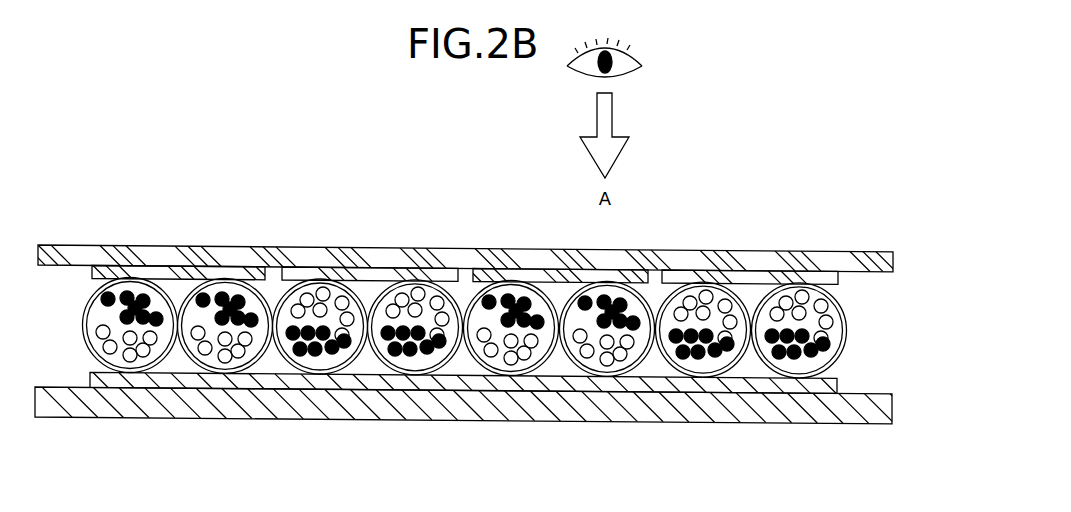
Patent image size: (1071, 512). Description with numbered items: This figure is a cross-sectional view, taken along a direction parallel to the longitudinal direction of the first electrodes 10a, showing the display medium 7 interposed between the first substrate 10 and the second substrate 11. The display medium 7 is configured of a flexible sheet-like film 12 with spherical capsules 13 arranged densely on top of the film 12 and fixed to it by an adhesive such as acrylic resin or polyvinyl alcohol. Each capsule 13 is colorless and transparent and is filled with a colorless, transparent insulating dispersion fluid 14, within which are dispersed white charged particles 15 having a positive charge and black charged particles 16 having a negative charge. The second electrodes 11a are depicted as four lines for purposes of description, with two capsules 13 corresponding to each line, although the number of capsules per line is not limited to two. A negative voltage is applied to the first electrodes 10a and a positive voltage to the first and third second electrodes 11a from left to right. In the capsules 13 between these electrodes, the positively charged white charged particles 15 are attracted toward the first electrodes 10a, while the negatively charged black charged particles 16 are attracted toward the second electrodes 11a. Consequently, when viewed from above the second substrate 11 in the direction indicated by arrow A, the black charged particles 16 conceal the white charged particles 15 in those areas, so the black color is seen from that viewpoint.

The display medium 7 is at (861, 369).
The first substrate 10 is at (483, 419).
The first electrodes 10a is at (181, 394).
The second substrate 11 is at (368, 258).
The second electrodes 11a is at (148, 272).
The film 12 is at (222, 367).
The capsules 13 is at (85, 332).
The dispersion fluid 14 is at (95, 322).
The white charged particles 15 is at (110, 350).
The black charged particles 16 is at (102, 296).